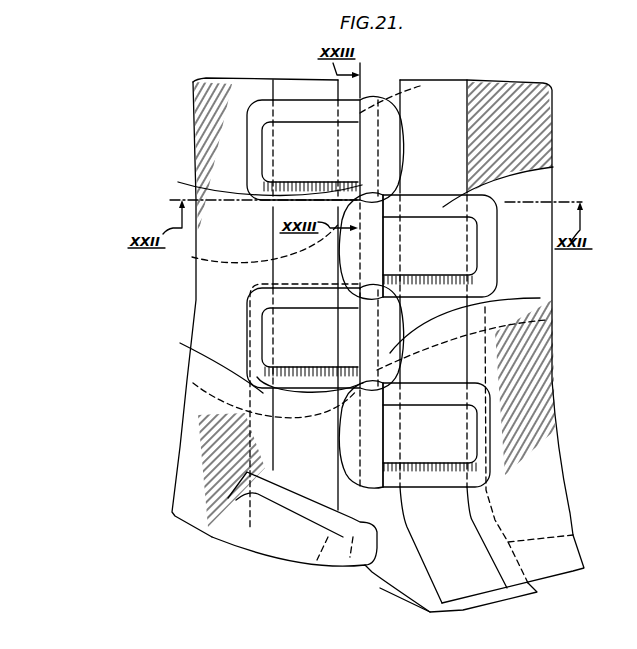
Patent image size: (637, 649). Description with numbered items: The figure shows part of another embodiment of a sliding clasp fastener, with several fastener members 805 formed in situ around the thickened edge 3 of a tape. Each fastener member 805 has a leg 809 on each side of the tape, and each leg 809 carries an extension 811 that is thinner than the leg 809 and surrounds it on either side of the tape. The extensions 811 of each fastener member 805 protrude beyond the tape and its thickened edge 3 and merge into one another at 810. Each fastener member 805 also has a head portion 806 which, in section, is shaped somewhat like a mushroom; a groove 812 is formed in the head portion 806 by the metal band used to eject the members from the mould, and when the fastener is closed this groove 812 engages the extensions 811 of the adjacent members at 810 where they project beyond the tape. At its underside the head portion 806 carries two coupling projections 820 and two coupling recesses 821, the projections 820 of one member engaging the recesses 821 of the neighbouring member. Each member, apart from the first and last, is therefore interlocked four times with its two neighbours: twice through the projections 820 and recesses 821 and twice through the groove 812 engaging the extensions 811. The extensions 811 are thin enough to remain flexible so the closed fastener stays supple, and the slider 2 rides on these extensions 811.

The slider 2 is at (580, 536).
The thickened edge 3 is at (288, 533).
The fastener member 805 is at (292, 112).
The head portion 806 is at (540, 300).
The leg 809 is at (297, 327).
The merging point of extensions 810 is at (355, 312).
The extension 811 is at (257, 377).
The groove 812 is at (547, 320).
The coupling projection 820 is at (370, 97).
The coupling recess 821 is at (418, 88).